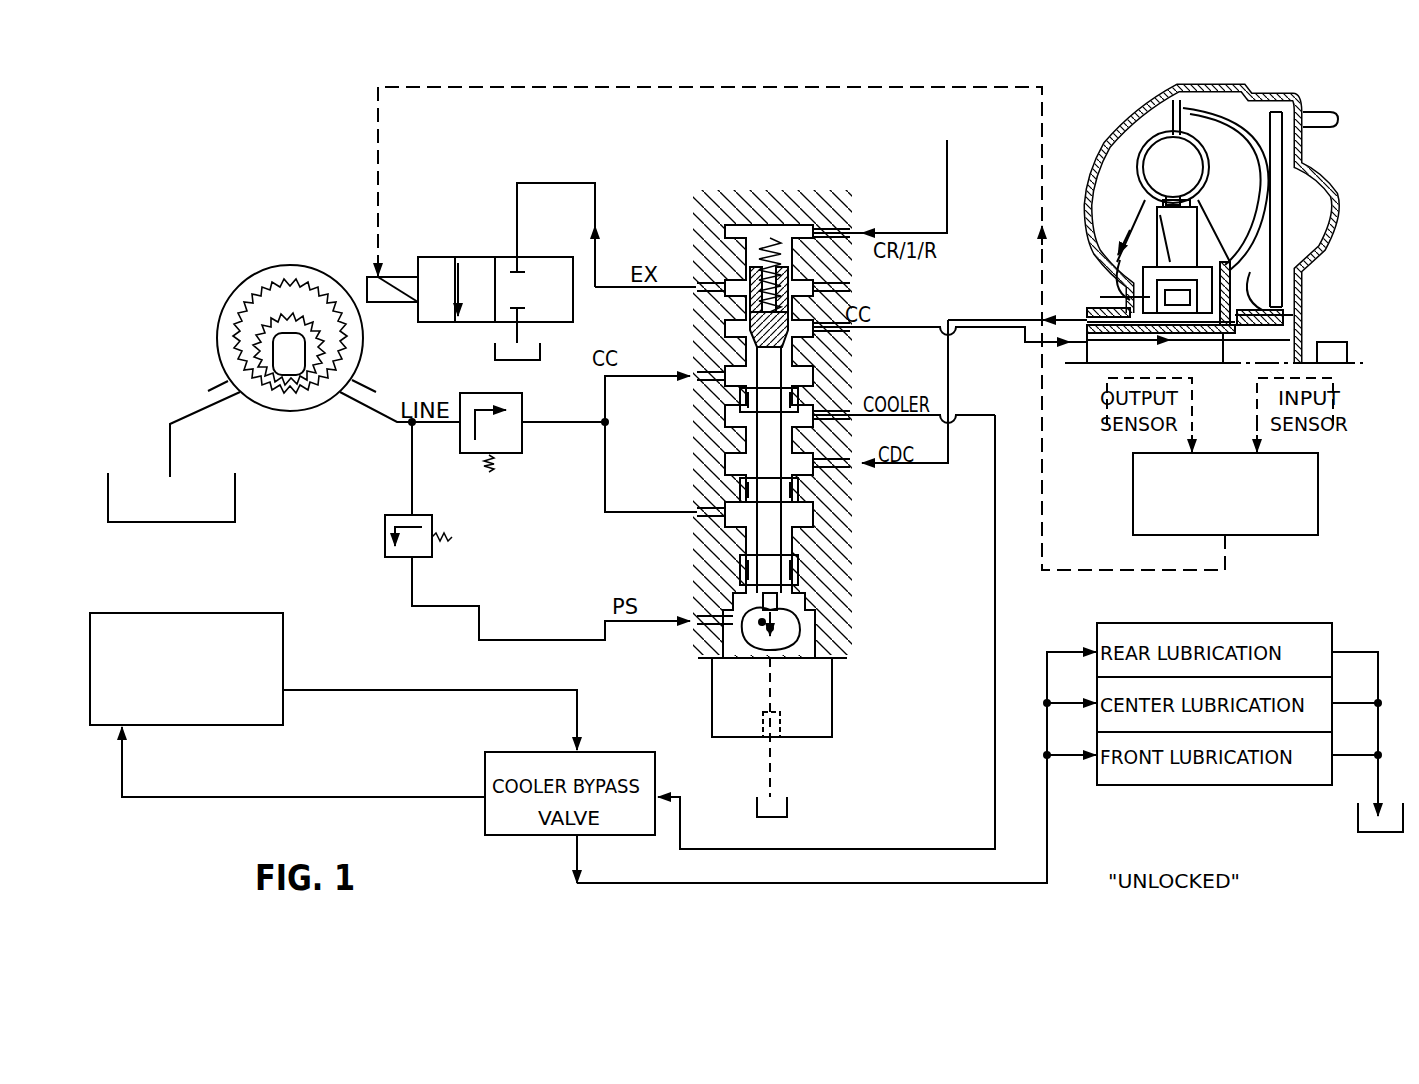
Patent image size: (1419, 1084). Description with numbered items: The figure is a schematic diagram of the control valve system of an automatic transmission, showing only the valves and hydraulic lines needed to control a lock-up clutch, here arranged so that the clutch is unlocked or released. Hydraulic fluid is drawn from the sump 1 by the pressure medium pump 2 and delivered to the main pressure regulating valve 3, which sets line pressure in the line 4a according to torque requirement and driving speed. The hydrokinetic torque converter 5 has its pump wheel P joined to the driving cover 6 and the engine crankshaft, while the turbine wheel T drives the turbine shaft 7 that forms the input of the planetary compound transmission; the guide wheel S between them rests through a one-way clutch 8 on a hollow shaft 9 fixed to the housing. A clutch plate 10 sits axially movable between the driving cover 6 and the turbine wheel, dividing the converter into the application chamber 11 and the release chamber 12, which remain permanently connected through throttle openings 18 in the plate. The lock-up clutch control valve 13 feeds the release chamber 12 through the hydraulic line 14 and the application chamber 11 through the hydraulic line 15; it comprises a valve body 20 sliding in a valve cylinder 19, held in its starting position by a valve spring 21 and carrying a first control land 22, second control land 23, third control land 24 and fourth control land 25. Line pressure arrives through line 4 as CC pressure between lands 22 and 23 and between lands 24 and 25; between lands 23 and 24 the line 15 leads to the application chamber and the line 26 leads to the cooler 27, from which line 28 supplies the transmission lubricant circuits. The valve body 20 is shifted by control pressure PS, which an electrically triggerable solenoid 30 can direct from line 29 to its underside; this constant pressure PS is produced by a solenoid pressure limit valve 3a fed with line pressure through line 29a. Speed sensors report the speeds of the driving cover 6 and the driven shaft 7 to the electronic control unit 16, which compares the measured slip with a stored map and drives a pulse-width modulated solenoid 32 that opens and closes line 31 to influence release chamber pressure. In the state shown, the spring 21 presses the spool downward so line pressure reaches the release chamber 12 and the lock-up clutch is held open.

The sump 1 is at (236, 493).
The pressure medium pump 2 is at (270, 270).
The main pressure regulating valve 3 is at (505, 456).
The solenoid pressure limit valve 3a is at (384, 538).
The line 4 is at (565, 425).
The line 4a is at (435, 426).
The hydrokinetic torque converter 5 is at (1207, 235).
The driving cover 6 is at (1300, 100).
The turbine shaft 7 is at (1082, 364).
The one-way clutch 8 is at (1152, 297).
The hollow shaft 9 is at (1193, 342).
The clutch plate 10 is at (1283, 210).
The application chamber 11 is at (1188, 180).
The release chamber 12 is at (1313, 245).
The lock-up clutch control valve 13 is at (768, 479).
The hydraulic line 14 is at (911, 329).
The hydraulic line 15 is at (943, 468).
The electronic control unit 16 is at (1311, 471).
The throttle openings 18 is at (1277, 237).
The valve cylinder 19 is at (818, 476).
The valve body 20 is at (760, 438).
The valve spring 21 is at (774, 242).
The first control land 22 is at (798, 293).
The second control land 23 is at (800, 396).
The third control land 24 is at (804, 492).
The fourth control land 25 is at (804, 580).
The line 26 is at (344, 797).
The cooler 27 is at (277, 630).
The line 28 is at (400, 688).
The line 29 is at (536, 639).
The line 29a is at (410, 485).
The solenoid 30 is at (712, 713).
The line 31 is at (608, 286).
The pulse-width modulated solenoid 32 is at (474, 265).